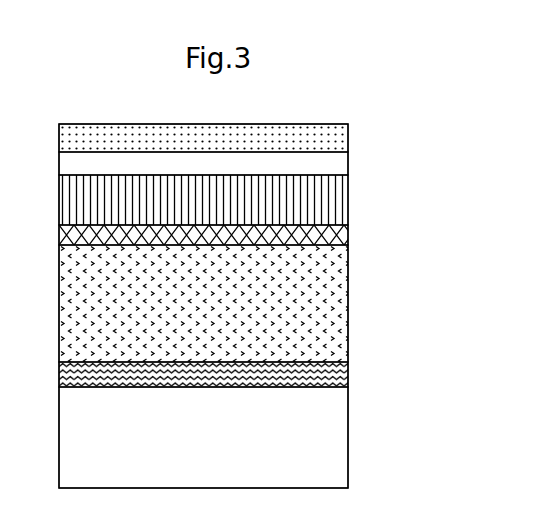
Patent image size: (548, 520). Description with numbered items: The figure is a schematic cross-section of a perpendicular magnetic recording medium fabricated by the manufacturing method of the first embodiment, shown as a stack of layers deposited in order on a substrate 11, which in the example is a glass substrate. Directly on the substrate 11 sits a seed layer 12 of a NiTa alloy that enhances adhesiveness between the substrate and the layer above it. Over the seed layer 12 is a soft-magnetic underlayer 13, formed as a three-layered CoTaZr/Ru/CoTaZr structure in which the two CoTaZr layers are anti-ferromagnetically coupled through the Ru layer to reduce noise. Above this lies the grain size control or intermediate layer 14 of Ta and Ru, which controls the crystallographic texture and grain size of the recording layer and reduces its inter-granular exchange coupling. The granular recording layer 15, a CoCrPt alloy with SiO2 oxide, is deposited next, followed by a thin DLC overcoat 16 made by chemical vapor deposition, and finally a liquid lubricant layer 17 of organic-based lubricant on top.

The substrate 11 is at (310, 443).
The seed layer 12 is at (320, 377).
The soft-magnetic underlayer 13 is at (320, 315).
The intermediate layer 14 is at (328, 237).
The granular recording layer 15 is at (325, 198).
The overcoat 16 is at (325, 162).
The liquid lubricant layer 17 is at (328, 135).